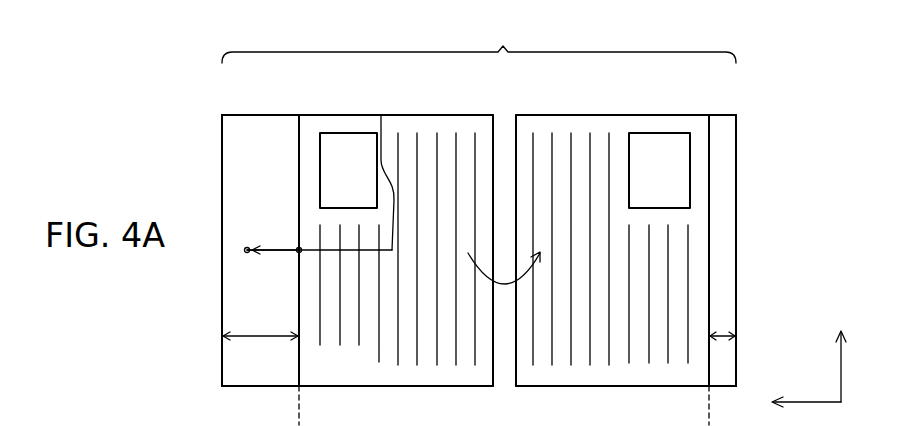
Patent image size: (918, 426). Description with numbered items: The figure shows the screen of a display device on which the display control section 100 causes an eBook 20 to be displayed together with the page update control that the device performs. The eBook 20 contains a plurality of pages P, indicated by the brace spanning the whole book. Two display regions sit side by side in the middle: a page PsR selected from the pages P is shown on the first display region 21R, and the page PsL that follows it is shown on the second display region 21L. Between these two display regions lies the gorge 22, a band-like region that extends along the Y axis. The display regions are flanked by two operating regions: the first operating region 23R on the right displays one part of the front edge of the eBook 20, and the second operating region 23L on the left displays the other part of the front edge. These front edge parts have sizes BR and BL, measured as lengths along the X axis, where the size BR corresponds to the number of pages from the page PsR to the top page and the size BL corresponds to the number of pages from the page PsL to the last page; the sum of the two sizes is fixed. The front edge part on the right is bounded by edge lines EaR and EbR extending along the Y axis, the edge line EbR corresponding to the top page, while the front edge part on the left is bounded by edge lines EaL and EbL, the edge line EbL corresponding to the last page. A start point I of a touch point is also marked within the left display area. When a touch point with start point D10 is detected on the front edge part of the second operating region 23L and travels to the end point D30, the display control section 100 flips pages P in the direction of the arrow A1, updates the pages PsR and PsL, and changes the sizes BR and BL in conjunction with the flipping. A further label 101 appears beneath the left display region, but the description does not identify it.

The eBook 20 is at (213, 79).
The pages P is at (479, 43).
The second operating region 23L is at (228, 153).
The first operating region 23R is at (737, 156).
The page PsL is at (345, 120).
The page PsR is at (653, 125).
The start point I is at (381, 115).
The second display region 21L is at (397, 223).
The first display region 21R is at (610, 223).
The gorge 22 is at (502, 112).
The left nozzle rows 101 is at (397, 258).
The display control section 100 is at (610, 258).
The end point D30 is at (247, 247).
The start point D10 is at (297, 254).
The size BL is at (247, 334).
The size BR is at (714, 336).
The edge line EaL is at (300, 363).
The edge line EaR is at (710, 263).
The edge line EbL is at (222, 366).
The edge line EbR is at (737, 208).
The arrow A1 is at (504, 287).
The X axis X is at (797, 405).
The Y axis Y is at (840, 353).